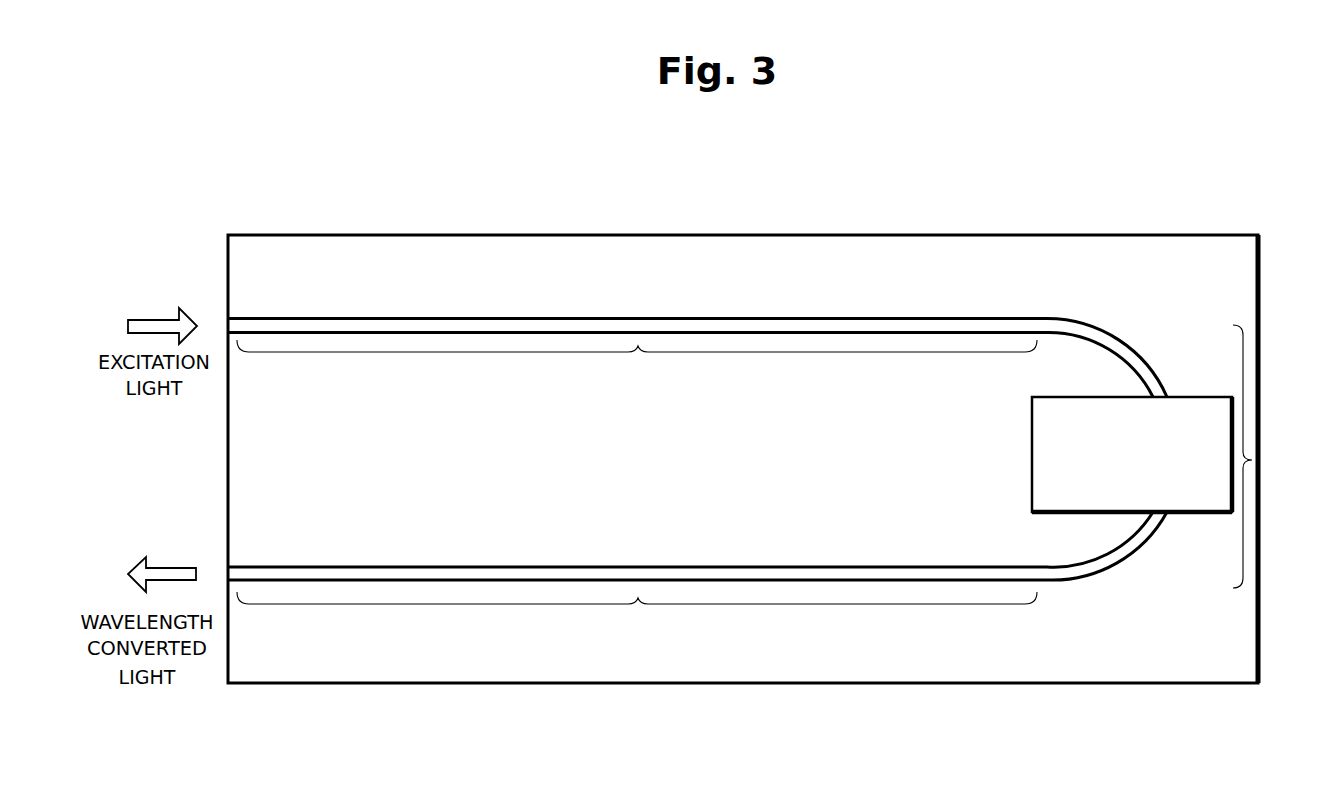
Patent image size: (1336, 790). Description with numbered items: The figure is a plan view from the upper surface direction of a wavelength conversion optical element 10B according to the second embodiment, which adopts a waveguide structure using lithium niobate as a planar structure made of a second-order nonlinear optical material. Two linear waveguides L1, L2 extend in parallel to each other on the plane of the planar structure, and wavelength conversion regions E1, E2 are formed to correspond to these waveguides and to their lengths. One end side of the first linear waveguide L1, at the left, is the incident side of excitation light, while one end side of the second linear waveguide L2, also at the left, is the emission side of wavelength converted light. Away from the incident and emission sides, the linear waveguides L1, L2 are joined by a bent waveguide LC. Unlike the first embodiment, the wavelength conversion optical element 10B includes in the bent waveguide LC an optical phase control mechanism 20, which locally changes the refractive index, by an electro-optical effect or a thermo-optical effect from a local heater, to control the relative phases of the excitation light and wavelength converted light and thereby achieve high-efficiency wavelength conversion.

The wavelength conversion optical element 10B is at (762, 235).
The first linear waveguide L1 is at (717, 326).
The second linear waveguide L2 is at (735, 578).
The wavelength conversion region E1 is at (637, 366).
The wavelength conversion region E2 is at (637, 617).
The optical phase control mechanism 20 is at (1193, 395).
The bent waveguide LC is at (1252, 460).